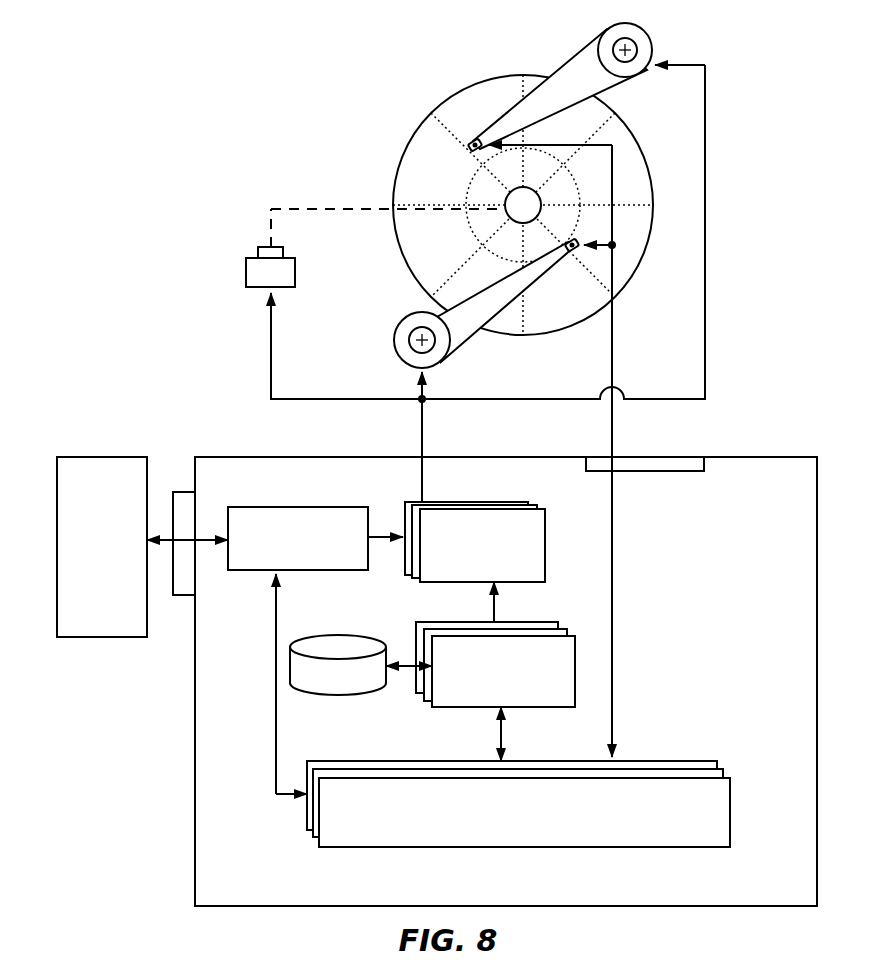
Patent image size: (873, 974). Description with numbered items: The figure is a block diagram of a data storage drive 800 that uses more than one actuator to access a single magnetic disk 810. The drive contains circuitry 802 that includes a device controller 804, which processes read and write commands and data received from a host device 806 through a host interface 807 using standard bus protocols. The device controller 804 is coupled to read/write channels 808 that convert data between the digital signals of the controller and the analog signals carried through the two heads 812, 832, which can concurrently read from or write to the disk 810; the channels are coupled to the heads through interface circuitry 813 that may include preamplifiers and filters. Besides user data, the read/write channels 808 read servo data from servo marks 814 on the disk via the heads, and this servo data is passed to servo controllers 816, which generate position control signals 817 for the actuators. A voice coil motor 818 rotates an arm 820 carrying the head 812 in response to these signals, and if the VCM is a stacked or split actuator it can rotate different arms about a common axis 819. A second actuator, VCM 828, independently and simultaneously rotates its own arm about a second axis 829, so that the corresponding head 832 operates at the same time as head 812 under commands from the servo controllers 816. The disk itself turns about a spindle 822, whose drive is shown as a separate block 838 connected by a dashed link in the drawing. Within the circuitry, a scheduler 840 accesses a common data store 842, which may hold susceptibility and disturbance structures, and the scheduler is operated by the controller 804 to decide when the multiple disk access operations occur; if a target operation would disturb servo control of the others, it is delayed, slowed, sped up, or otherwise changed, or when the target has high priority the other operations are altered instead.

The data storage drive 800 is at (138, 203).
The circuitry 802 is at (198, 457).
The device controller 804 is at (260, 507).
The host device 806 is at (88, 457).
The host interface 807 is at (172, 595).
The read/write channels 808 is at (678, 761).
The magnetic disk 810 is at (436, 108).
The read/write head 812 is at (572, 252).
The interface circuitry 813 is at (705, 464).
The servo marks 814 is at (608, 123).
The servo controller 816 is at (480, 502).
The position control signals 817 is at (421, 424).
The voice coil motor 818 is at (394, 340).
The common axis 819 is at (409, 346).
The arm 820 is at (452, 308).
The spindle 822 is at (505, 205).
The second actuator 828 is at (653, 47).
The second axis 829 is at (637, 50).
The read/write head 832 is at (477, 138).
The spindle motor controller 838 is at (246, 272).
The scheduler 840 is at (450, 623).
The common data store 842 is at (332, 641).